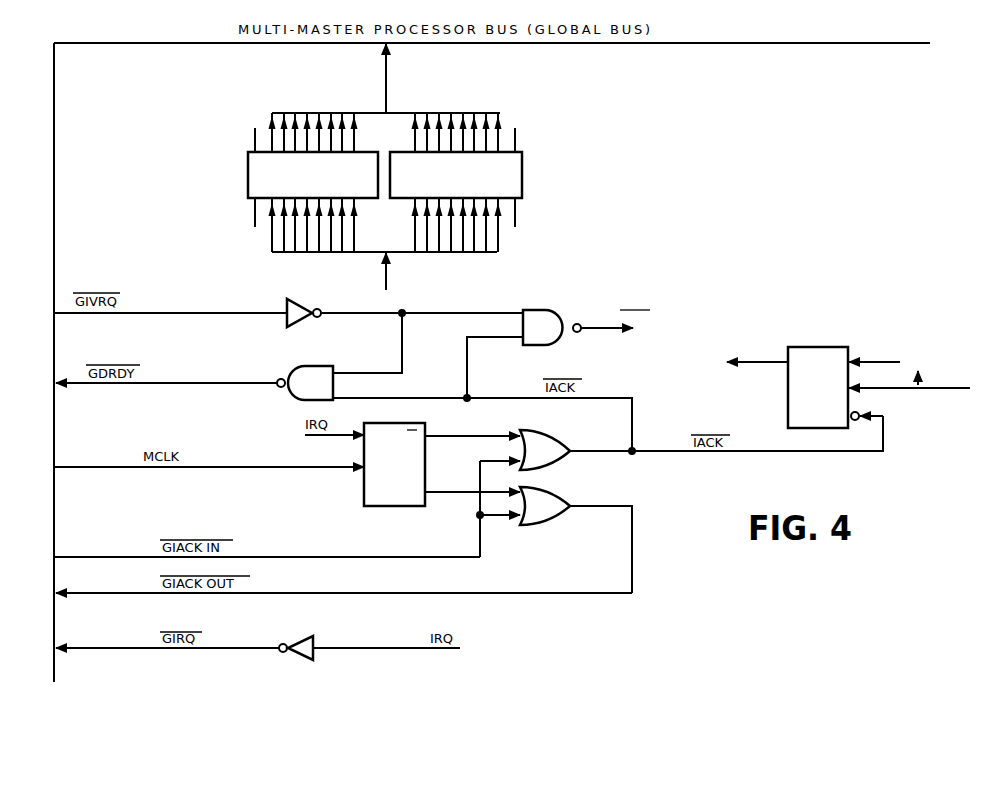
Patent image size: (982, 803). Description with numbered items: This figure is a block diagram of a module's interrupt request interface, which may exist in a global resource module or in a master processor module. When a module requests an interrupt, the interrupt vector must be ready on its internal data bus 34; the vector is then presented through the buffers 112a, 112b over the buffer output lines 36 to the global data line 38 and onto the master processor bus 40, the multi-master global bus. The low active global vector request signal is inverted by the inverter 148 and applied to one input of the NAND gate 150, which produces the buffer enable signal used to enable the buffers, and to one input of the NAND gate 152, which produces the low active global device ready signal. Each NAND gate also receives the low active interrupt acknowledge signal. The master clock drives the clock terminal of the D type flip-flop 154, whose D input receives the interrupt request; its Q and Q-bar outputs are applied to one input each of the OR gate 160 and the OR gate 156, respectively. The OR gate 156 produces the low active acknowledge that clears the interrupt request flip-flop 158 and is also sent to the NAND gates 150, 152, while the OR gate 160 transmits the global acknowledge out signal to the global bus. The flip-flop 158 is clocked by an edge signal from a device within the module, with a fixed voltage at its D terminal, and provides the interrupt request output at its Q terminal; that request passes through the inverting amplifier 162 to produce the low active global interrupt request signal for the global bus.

The master processor bus 40 is at (192, 44).
The global data line 38 is at (386, 93).
The buffer bus lines 36 is at (448, 113).
The internal data bus 34 is at (367, 252).
The buffer 112a is at (248, 183).
The buffer 112b is at (522, 183).
The inverter 148 is at (291, 298).
The NAND gate 150 is at (545, 310).
The NAND gate 152 is at (333, 384).
The D type flip-flop 154 is at (412, 423).
The OR gate 156 is at (549, 436).
The interrupt request flip-flop 158 is at (788, 398).
The OR gate 160 is at (560, 497).
The inverting amplifier 162 is at (312, 637).